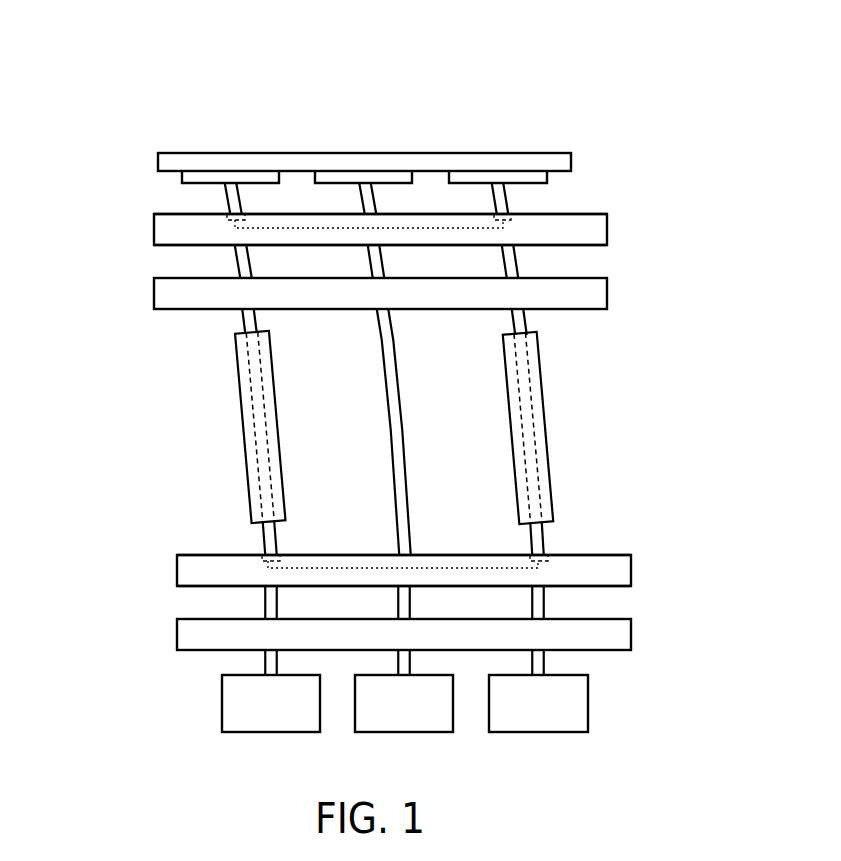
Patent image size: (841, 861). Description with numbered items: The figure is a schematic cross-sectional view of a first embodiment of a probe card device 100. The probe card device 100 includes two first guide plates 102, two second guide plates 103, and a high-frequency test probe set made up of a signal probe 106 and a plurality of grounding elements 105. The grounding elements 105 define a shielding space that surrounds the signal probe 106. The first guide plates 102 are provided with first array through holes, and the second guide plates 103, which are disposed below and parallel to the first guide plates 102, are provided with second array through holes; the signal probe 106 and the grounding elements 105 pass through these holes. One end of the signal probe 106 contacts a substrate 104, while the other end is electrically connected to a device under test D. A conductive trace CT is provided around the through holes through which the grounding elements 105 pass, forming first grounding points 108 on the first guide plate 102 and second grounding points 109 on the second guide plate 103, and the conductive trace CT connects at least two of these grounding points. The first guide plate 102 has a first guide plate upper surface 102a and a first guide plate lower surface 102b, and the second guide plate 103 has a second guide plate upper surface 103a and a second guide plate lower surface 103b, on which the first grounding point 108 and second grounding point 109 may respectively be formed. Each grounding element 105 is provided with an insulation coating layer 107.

The probe card device 100 is at (108, 80).
The substrate 104 is at (170, 162).
The first grounding point 108 is at (228, 218).
The first guide plate 102 is at (170, 228).
The first guide plate upper surface 102a is at (600, 211).
The first guide plate lower surface 102b is at (600, 248).
The conductive trace CT is at (471, 226).
The grounding element 105 is at (254, 320).
The signal probe 106 is at (395, 430).
The insulation coating layer 107 is at (279, 425).
The second grounding point 109 is at (265, 558).
The second guide plate 103 is at (195, 566).
The second guide plate upper surface 103a is at (617, 554).
The second guide plate lower surface 103b is at (617, 588).
The device under test D is at (238, 703).